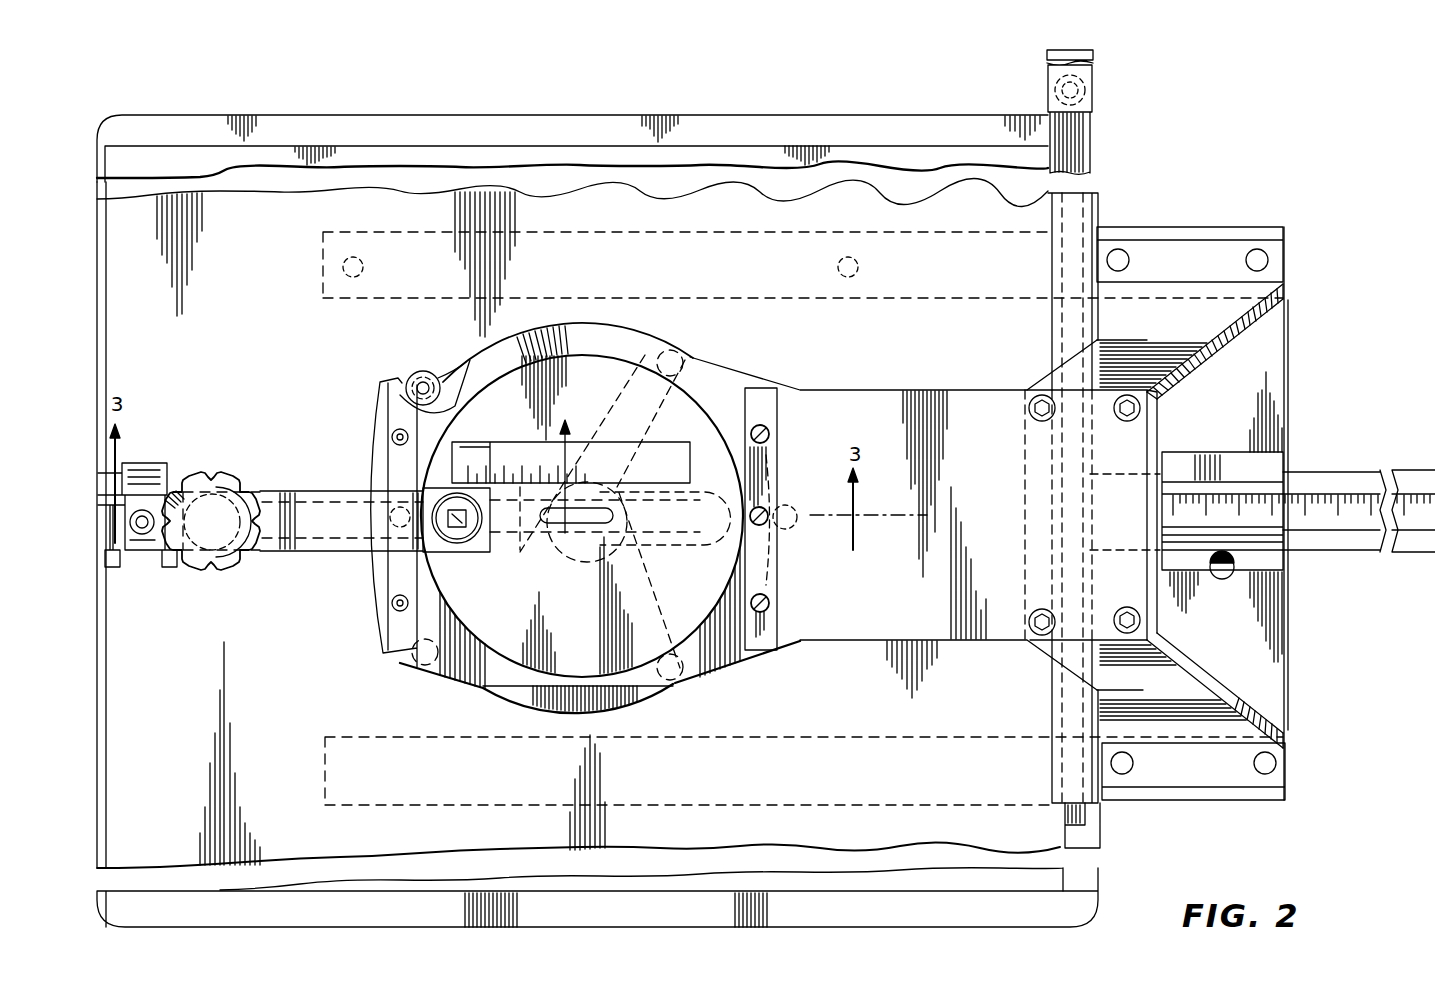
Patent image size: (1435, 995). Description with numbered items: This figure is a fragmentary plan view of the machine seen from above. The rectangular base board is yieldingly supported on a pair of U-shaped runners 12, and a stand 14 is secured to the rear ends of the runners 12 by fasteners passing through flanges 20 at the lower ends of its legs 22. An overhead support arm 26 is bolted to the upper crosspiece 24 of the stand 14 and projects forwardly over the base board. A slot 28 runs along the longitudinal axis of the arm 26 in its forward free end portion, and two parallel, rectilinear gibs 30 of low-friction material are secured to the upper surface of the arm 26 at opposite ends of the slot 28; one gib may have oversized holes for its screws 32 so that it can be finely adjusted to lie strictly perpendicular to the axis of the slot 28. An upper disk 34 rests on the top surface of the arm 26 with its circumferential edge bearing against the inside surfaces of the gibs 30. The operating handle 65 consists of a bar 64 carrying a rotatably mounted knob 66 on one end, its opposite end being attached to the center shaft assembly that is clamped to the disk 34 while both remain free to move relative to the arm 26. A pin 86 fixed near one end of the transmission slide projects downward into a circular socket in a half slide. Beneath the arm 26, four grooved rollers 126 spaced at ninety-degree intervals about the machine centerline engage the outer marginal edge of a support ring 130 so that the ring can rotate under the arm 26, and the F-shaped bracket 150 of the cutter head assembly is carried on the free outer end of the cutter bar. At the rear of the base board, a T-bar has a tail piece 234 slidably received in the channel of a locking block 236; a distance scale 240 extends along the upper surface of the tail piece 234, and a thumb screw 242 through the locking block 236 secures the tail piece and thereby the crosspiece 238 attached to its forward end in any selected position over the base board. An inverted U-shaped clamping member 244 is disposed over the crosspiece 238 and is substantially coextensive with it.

The U-shaped runners 12 is at (1258, 233).
The stand 14 is at (1222, 334).
The flanges 20 is at (1273, 262).
The legs 22 is at (1197, 350).
The upper crosspiece 24 is at (1155, 617).
The overhead support arm 26 is at (886, 390).
The slot 28 is at (711, 552).
The gibs 30 is at (392, 656).
The screws 32 is at (393, 605).
The upper disk 34 is at (637, 356).
The bar 64 is at (323, 546).
The operating handle 65 is at (313, 488).
The knob 66 is at (200, 556).
The pin 86 is at (545, 528).
The rollers 126 is at (423, 371).
The support ring 130 is at (600, 328).
The F-shaped bracket 150 is at (167, 460).
The tail piece 234 is at (1413, 476).
The locking block 236 is at (1272, 562).
The crosspiece 238 is at (1084, 823).
The distance scale 240 is at (1413, 514).
The thumb screw 242 is at (1218, 579).
The clamping member 244 is at (1094, 157).